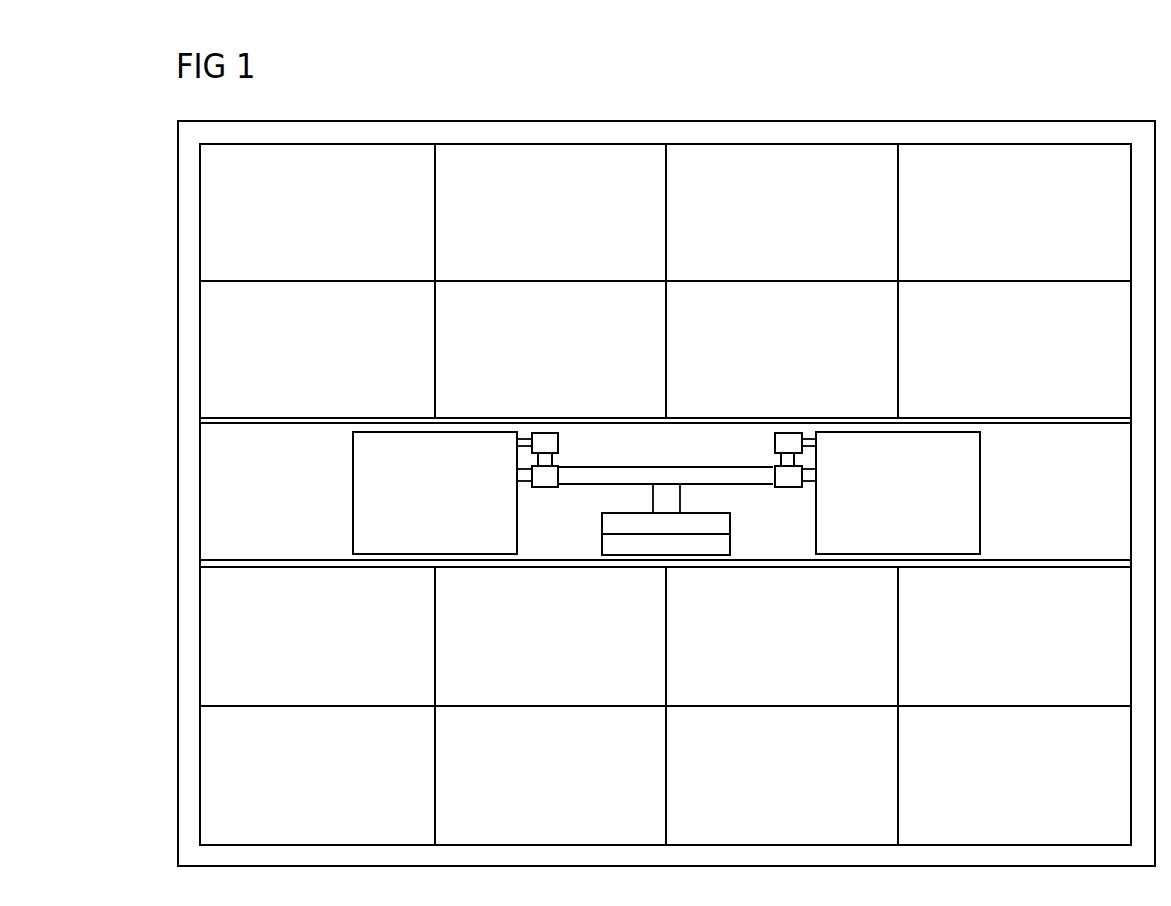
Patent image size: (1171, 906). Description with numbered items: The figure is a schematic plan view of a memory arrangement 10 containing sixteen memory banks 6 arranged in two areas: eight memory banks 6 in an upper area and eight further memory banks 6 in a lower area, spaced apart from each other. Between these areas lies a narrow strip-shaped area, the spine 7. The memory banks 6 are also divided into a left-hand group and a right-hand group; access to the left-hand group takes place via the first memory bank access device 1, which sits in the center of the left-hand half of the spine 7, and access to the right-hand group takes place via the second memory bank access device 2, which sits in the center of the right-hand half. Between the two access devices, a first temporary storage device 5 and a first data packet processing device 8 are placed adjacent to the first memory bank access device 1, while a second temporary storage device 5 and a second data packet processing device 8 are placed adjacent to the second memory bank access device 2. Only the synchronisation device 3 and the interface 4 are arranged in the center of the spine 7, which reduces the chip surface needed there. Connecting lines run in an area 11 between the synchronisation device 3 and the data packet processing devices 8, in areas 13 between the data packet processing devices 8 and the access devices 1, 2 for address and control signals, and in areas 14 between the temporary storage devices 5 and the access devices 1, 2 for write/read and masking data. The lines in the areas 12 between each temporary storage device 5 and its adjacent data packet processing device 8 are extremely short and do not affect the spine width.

The memory arrangement 10 is at (650, 121).
The memory bank 6 is at (665, 494).
The spine 7 is at (665, 491).
The first memory bank access device 1 is at (353, 488).
The second memory bank access device 2 is at (981, 512).
The synchronisation device 3 is at (731, 527).
The interface 4 is at (731, 545).
The temporary storage device 5 is at (545, 442).
The data packet processing device 8 is at (547, 487).
The area between synchronisation device and data packet processing devices 11 is at (668, 497).
The area between temporary storage device and data packet processing device 12 is at (553, 460).
The area between data packet processing device and memory bank access device 13 is at (523, 478).
The area between temporary storage device and memory bank access device 14 is at (523, 443).